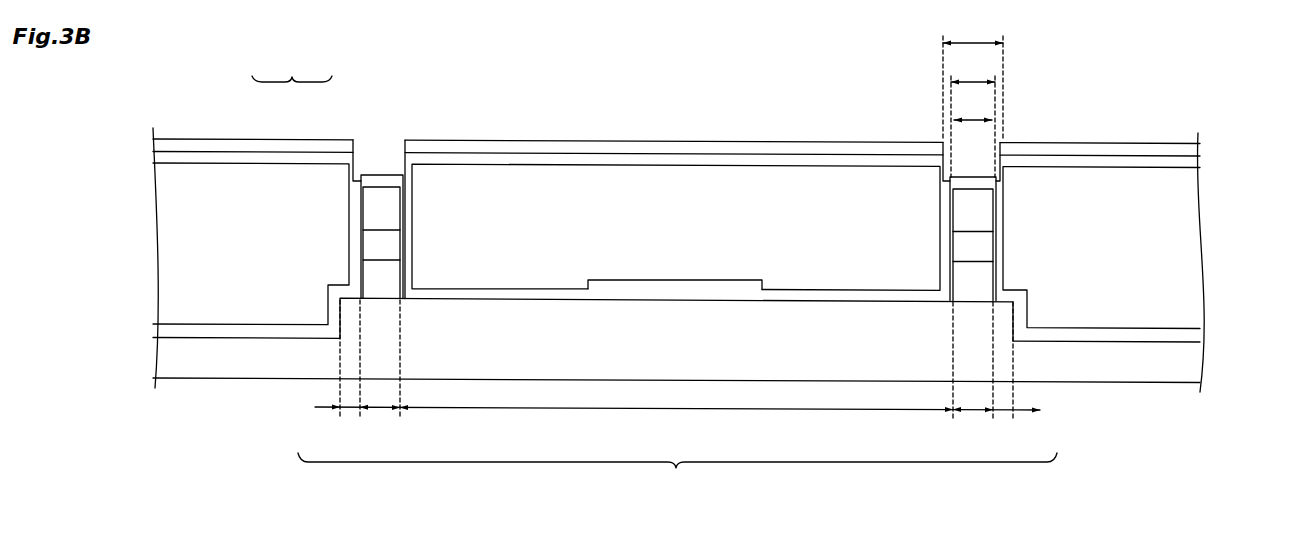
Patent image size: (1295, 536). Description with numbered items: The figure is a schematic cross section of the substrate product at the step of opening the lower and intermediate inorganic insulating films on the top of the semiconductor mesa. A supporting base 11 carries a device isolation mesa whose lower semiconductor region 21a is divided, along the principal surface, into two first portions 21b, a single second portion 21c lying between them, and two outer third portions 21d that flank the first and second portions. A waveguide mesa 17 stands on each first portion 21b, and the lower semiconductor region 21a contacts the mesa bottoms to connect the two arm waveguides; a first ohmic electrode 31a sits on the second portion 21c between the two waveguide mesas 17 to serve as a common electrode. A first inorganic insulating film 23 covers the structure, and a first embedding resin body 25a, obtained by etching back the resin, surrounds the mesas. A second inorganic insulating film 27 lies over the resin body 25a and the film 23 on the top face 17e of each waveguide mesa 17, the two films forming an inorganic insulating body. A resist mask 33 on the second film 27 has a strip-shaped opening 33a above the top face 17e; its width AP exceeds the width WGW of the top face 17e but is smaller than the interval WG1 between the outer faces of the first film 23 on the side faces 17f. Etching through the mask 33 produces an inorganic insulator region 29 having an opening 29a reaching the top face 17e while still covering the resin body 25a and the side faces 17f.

The supporting base 11 is at (1195, 364).
The waveguide mesa 17 is at (378, 300).
The top face of the waveguide mesa 17e is at (394, 172).
The side face of the waveguide mesa 17f is at (403, 204).
The lower semiconductor region 21a is at (677, 473).
The first portion 21b is at (381, 412).
The second portion 21c is at (669, 412).
The third portion 21d is at (347, 412).
The first inorganic insulating film 23 is at (348, 207).
The first embedding resin body 25a is at (179, 216).
The second inorganic insulating film 27 is at (283, 157).
The inorganic insulator region 29 is at (292, 65).
The opening of the inorganic insulator region 29a is at (365, 150).
The first ohmic electrode 31a is at (734, 291).
The mask 33 is at (1087, 141).
The opening of the mask 33a is at (393, 170).
The interval between outer faces of the first inorganic insulating film WG1 is at (973, 42).
The width of the opening of the mask AP is at (972, 81).
The width of the top face of the waveguide mesa WGW is at (972, 119).